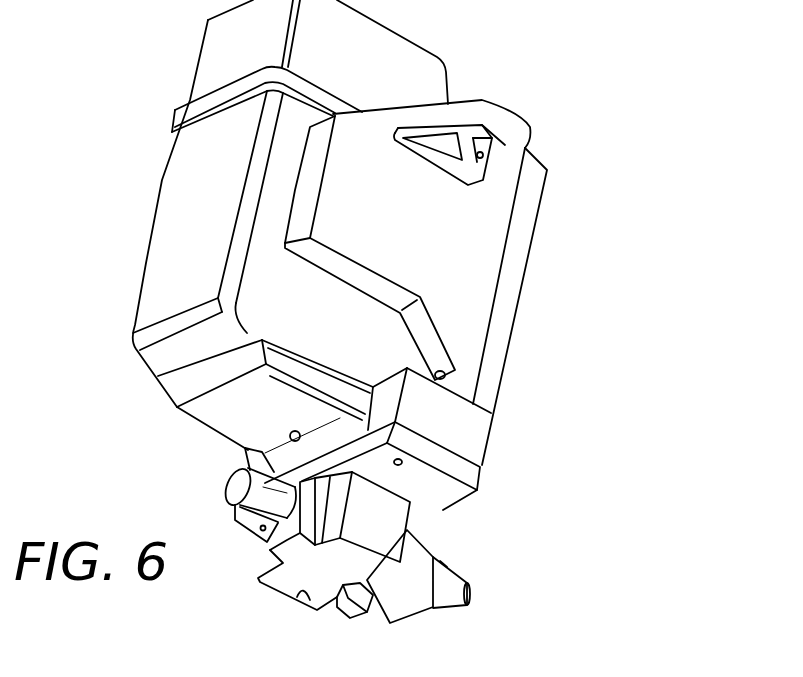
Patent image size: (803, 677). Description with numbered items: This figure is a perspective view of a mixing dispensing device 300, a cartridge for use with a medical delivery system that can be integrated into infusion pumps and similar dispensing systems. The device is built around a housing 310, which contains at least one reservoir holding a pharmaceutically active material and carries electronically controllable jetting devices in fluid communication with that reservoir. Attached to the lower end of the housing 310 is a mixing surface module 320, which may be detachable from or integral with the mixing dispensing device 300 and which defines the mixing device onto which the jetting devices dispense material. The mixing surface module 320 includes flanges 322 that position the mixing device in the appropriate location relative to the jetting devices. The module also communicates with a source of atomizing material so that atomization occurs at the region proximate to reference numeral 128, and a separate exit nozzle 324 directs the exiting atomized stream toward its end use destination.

The mixing dispensing device 300 is at (573, 237).
The housing 310 is at (200, 57).
The mixing surface module 320 is at (393, 522).
The flanges 322 is at (475, 477).
The exit nozzle 324 is at (433, 568).
The atomization region 128 is at (467, 603).